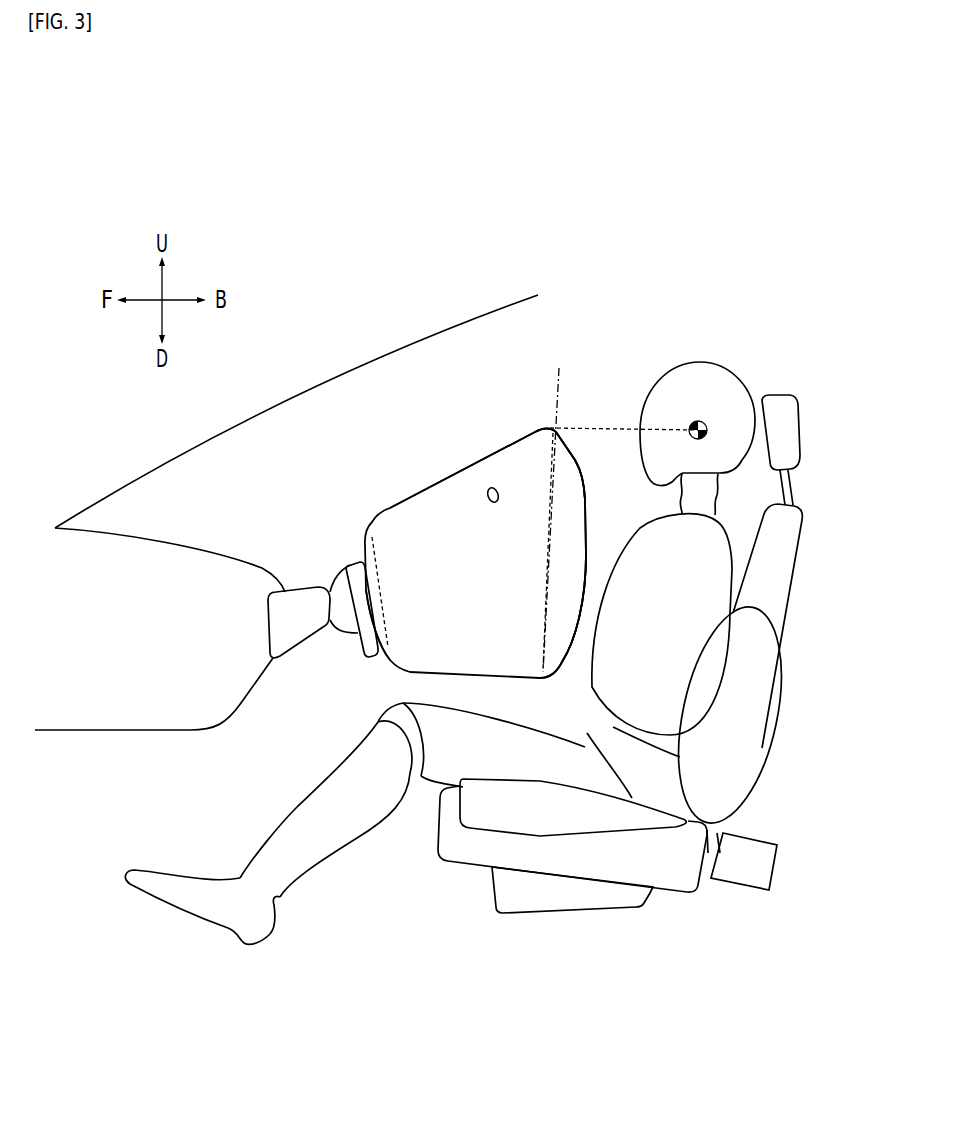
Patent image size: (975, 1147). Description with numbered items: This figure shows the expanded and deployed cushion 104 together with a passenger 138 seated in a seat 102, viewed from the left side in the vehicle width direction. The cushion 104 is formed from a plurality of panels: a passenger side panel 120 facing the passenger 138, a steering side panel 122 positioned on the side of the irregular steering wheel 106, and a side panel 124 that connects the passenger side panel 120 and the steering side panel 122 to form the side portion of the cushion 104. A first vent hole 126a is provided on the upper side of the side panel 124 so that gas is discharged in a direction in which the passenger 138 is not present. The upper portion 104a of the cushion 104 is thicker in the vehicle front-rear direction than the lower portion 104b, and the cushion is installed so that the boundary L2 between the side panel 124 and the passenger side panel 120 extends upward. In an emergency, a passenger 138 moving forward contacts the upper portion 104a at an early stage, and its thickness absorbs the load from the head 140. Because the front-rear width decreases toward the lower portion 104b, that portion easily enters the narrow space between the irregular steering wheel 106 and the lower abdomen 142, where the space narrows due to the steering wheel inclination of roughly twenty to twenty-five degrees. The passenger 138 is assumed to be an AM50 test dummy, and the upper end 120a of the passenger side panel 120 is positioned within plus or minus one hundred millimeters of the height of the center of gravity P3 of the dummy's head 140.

The seat 102 is at (760, 747).
The cushion 104 is at (486, 455).
The upper portion 104a is at (577, 443).
The lower portion 104b is at (563, 660).
The irregular steering wheel 106 is at (357, 563).
The passenger side panel 120 is at (573, 510).
The upper end 120a is at (560, 427).
The steering side panel 122 is at (385, 658).
The side panel 124 is at (422, 507).
The first vent hole 126a is at (493, 503).
The passenger 138 is at (723, 537).
The head 140 is at (685, 363).
The lower abdomen 142 is at (461, 631).
The center of gravity of the head P3 is at (700, 428).
The boundary L2 is at (554, 509).